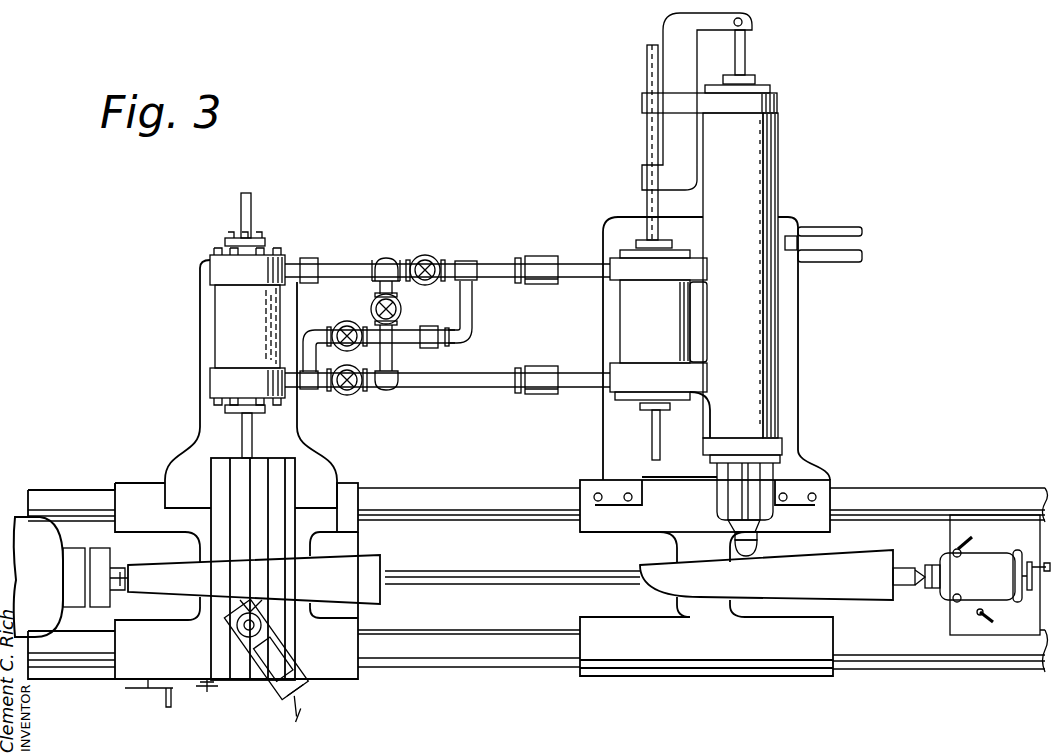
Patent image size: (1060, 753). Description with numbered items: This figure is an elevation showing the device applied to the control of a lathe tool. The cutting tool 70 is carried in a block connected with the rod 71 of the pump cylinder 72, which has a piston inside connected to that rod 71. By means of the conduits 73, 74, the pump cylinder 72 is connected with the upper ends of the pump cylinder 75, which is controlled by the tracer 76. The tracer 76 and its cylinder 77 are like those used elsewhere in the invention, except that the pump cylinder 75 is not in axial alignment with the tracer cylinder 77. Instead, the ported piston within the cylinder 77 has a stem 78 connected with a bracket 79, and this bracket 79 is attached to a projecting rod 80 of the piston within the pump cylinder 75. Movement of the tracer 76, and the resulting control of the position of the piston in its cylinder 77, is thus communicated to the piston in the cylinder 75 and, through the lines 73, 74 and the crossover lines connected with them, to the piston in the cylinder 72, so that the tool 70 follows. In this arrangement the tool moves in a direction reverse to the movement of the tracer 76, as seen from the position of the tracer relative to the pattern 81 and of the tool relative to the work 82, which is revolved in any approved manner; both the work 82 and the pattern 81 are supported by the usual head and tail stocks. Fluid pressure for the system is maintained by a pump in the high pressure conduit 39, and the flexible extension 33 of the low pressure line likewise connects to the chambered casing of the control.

The flexible extension 33 is at (845, 230).
The conduit 39 is at (840, 264).
The cutting tool 70 is at (242, 612).
The rod 71 is at (255, 433).
The pump cylinder 72 is at (232, 323).
The conduit 73 is at (478, 388).
The conduit 74 is at (500, 278).
The pump cylinder 75 is at (658, 350).
The tracer 76 is at (755, 553).
The tracer cylinder 77 is at (712, 278).
The stem 78 is at (748, 57).
The bracket 79 is at (697, 101).
The projecting rod 80 is at (648, 210).
The pattern 81 is at (766, 575).
The work 82 is at (254, 579).